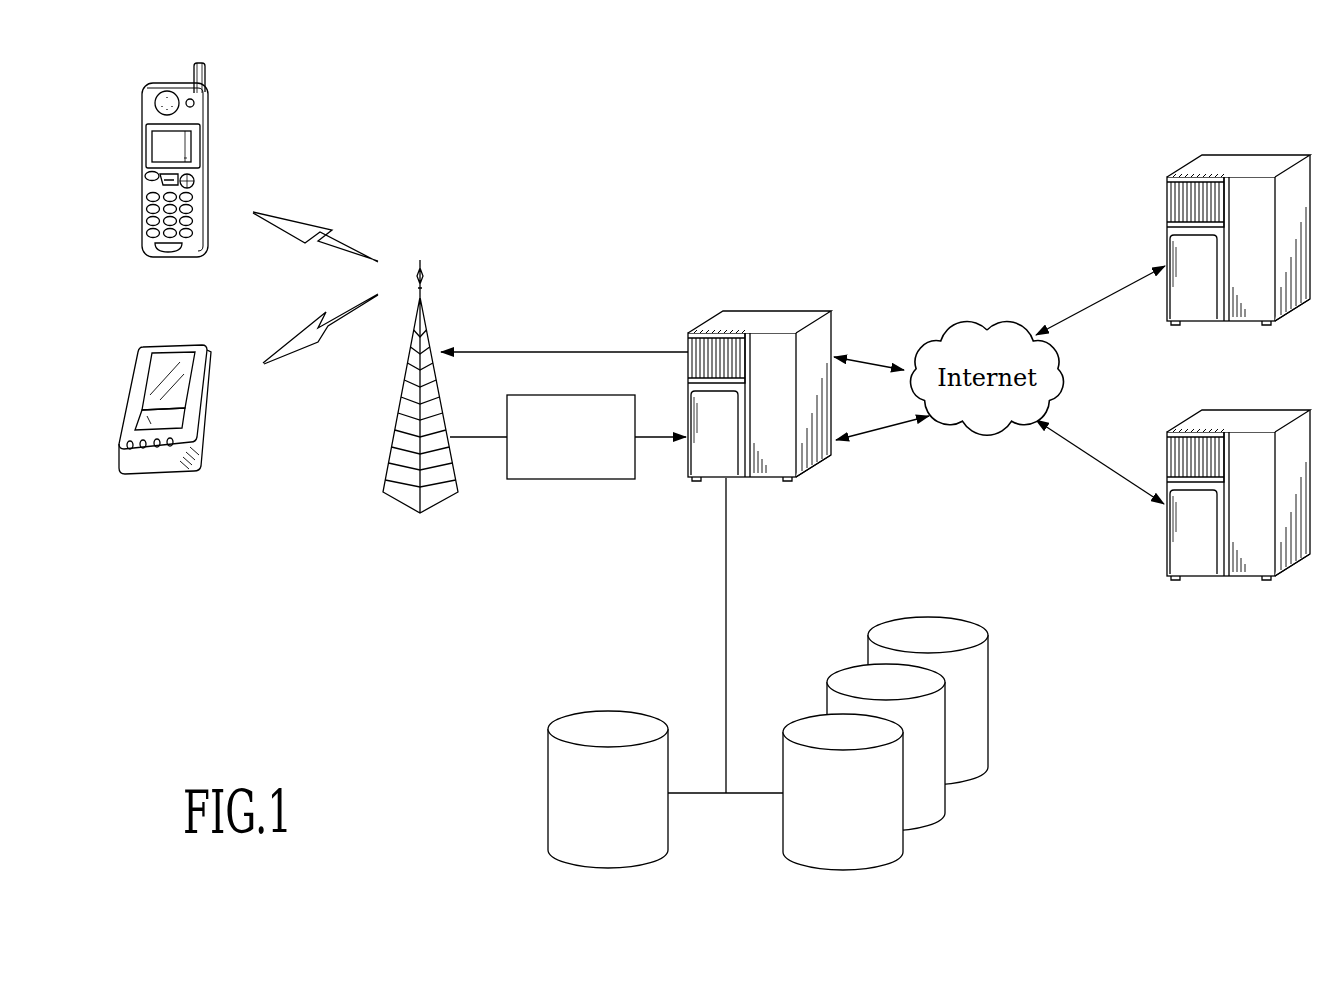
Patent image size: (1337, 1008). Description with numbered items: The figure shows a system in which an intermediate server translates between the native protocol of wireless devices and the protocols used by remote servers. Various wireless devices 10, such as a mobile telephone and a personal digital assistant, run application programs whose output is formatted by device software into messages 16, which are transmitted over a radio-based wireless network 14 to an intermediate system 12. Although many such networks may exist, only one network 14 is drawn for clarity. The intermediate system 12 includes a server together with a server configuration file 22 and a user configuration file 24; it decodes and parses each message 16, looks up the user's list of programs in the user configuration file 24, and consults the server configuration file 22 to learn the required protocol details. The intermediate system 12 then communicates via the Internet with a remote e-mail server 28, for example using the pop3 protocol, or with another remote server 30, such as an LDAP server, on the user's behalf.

The wireless device 10 is at (176, 257).
The intermediate system 12 is at (762, 312).
The wireless network 14 is at (386, 505).
The message 16 is at (570, 480).
The server configuration file 22 is at (548, 818).
The user configuration file 24 is at (903, 845).
The remote e-mail server 28 is at (1245, 410).
The other remote server 30 is at (1245, 153).